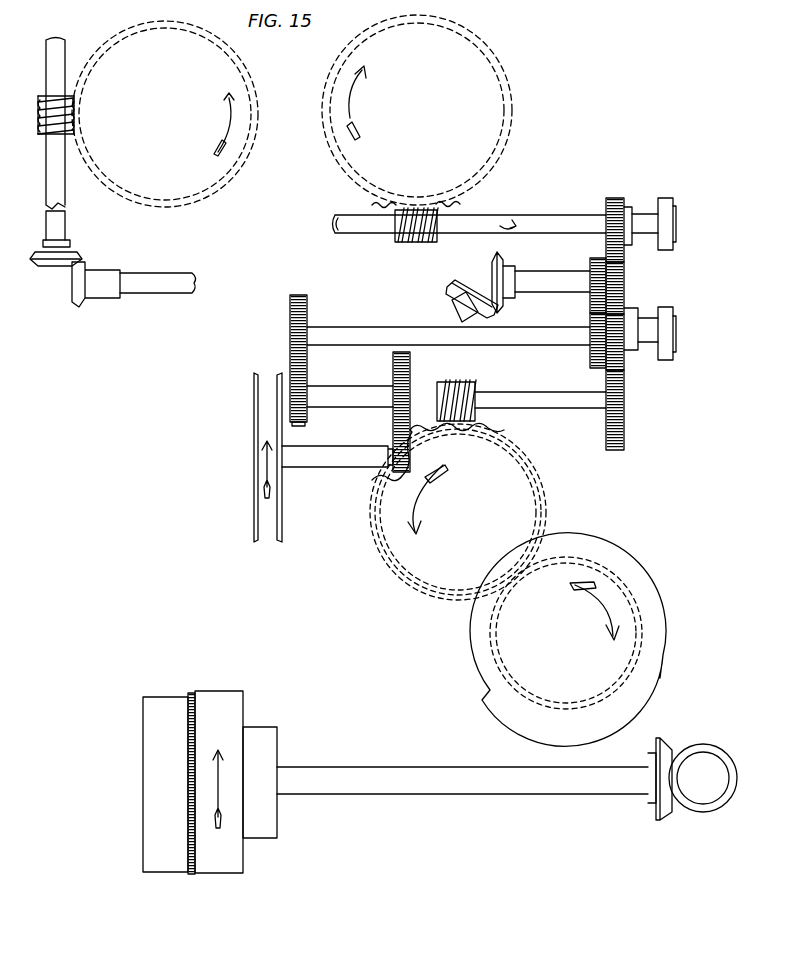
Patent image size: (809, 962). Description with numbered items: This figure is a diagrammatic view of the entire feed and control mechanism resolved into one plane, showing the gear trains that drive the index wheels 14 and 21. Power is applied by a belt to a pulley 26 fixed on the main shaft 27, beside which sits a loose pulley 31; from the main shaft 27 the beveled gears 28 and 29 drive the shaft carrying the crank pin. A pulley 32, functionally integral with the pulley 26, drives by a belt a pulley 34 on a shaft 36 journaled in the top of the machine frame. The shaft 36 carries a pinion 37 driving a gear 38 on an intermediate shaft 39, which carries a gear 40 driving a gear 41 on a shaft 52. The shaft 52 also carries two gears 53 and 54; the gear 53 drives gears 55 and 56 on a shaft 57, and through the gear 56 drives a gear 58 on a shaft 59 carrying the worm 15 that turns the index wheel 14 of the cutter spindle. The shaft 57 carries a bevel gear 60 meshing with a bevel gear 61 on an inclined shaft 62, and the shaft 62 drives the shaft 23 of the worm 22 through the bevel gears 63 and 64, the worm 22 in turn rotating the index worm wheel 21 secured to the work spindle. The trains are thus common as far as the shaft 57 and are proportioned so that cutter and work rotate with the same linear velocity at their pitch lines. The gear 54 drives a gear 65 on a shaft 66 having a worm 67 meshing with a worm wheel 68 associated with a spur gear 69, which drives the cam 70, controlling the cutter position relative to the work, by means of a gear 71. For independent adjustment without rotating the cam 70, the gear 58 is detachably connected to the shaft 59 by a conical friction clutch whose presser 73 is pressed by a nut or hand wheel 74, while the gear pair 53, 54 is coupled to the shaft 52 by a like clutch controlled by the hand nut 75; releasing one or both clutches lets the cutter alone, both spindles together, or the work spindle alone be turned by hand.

The index wheel 14 is at (345, 70).
The worm 15 is at (440, 212).
The index worm wheel 21 is at (232, 72).
The worm 22 is at (47, 126).
The shaft 23 is at (62, 190).
The pulley 26 is at (228, 862).
The main shaft 27 is at (466, 788).
The beveled gear 28 is at (665, 748).
The beveled gear 29 is at (712, 748).
The loose pulley 31 is at (172, 862).
The pulley 32 is at (265, 733).
The pulley 34 is at (272, 541).
The shaft 36 is at (338, 458).
The pinion 37 is at (402, 472).
The gear 38 is at (393, 362).
The intermediate shaft 39 is at (359, 397).
The gear 40 is at (300, 423).
The gear 41 is at (292, 340).
The shaft 52 is at (385, 333).
The gear 53 is at (592, 362).
The gear 54 is at (626, 318).
The gear 55 is at (596, 278).
The gear 56 is at (624, 287).
The shaft 57 is at (546, 279).
The gear 58 is at (612, 200).
The shaft 59 is at (553, 222).
The bevel gear 60 is at (490, 262).
The bevel gear 61 is at (452, 285).
The inclined shaft 62 is at (158, 282).
The bevel gear 63 is at (88, 272).
The bevel gear 64 is at (76, 256).
The gear 65 is at (624, 441).
The shaft 66 is at (572, 400).
The worm 67 is at (468, 381).
The worm wheel 68 is at (496, 424).
The spur gear 69 is at (543, 491).
The cam 70 is at (590, 532).
The gear 71 is at (490, 634).
The presser 73 is at (629, 212).
The nut or hand wheel 74 is at (666, 208).
The hand nut 75 is at (668, 358).